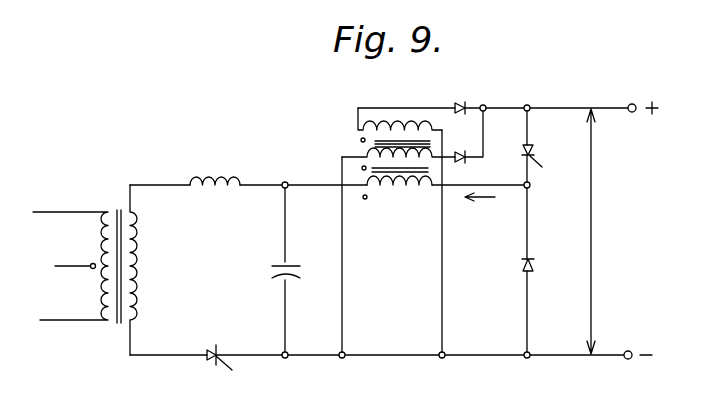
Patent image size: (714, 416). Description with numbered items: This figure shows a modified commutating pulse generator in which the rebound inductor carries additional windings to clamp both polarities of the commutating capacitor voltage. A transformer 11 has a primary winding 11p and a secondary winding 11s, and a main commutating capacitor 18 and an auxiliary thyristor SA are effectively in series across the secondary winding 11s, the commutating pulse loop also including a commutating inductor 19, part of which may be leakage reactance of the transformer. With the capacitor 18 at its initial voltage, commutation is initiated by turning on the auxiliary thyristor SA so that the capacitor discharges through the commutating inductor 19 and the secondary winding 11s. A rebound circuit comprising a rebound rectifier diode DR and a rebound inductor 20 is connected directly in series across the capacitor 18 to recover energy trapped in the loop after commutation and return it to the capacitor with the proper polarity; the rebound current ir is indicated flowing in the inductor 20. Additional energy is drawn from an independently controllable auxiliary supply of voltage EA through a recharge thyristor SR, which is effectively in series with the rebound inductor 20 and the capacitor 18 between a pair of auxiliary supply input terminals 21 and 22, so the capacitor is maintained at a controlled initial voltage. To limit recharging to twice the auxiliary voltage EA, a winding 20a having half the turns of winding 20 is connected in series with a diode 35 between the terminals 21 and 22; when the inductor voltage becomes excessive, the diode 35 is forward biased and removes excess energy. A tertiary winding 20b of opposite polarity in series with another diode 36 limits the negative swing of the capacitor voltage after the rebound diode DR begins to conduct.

The transformer 11 is at (113, 251).
The primary winding 11p is at (98, 238).
The secondary winding 11s is at (138, 268).
The commutating inductor 19 is at (198, 192).
The main commutating capacitor 18 is at (268, 268).
The auxiliary thyristor SA is at (215, 342).
The rebound inductor 20 is at (398, 194).
The additional winding 20a is at (400, 128).
The tertiary winding 20b is at (372, 155).
The diode 35 is at (470, 103).
The diode 36 is at (467, 160).
The current ir is at (480, 208).
The recharge thyristor SR is at (544, 149).
The rebound rectifier diode DR is at (508, 265).
The auxiliary supply of voltage EA is at (600, 231).
The auxiliary supply input terminal 21 is at (633, 103).
The auxiliary supply input terminal 22 is at (628, 360).